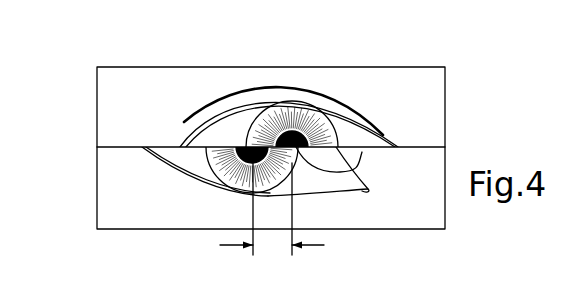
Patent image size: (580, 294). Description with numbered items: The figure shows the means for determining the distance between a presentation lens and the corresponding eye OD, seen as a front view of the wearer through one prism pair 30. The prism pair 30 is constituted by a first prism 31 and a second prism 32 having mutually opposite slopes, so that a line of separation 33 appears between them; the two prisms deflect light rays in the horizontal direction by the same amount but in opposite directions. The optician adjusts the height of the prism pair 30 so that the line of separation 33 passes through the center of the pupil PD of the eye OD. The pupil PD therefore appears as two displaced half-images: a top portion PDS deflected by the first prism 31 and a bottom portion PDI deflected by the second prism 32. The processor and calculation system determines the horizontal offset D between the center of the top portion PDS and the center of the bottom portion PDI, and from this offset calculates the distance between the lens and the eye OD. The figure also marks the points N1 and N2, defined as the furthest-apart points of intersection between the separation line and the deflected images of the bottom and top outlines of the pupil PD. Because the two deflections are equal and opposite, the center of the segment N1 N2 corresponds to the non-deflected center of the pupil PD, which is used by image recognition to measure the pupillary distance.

The prism pair 30 is at (128, 60).
The first prism 31 is at (100, 87).
The second prism 32 is at (367, 223).
The line of separation 33 is at (97, 147).
The point N1 is at (236, 150).
The point N2 is at (362, 164).
The right eye OD is at (165, 150).
The pupil PD is at (279, 105).
The top portion of the pupil image PDS is at (342, 116).
The bottom portion of the pupil image PDI is at (193, 168).
The horizontal offset D is at (256, 247).